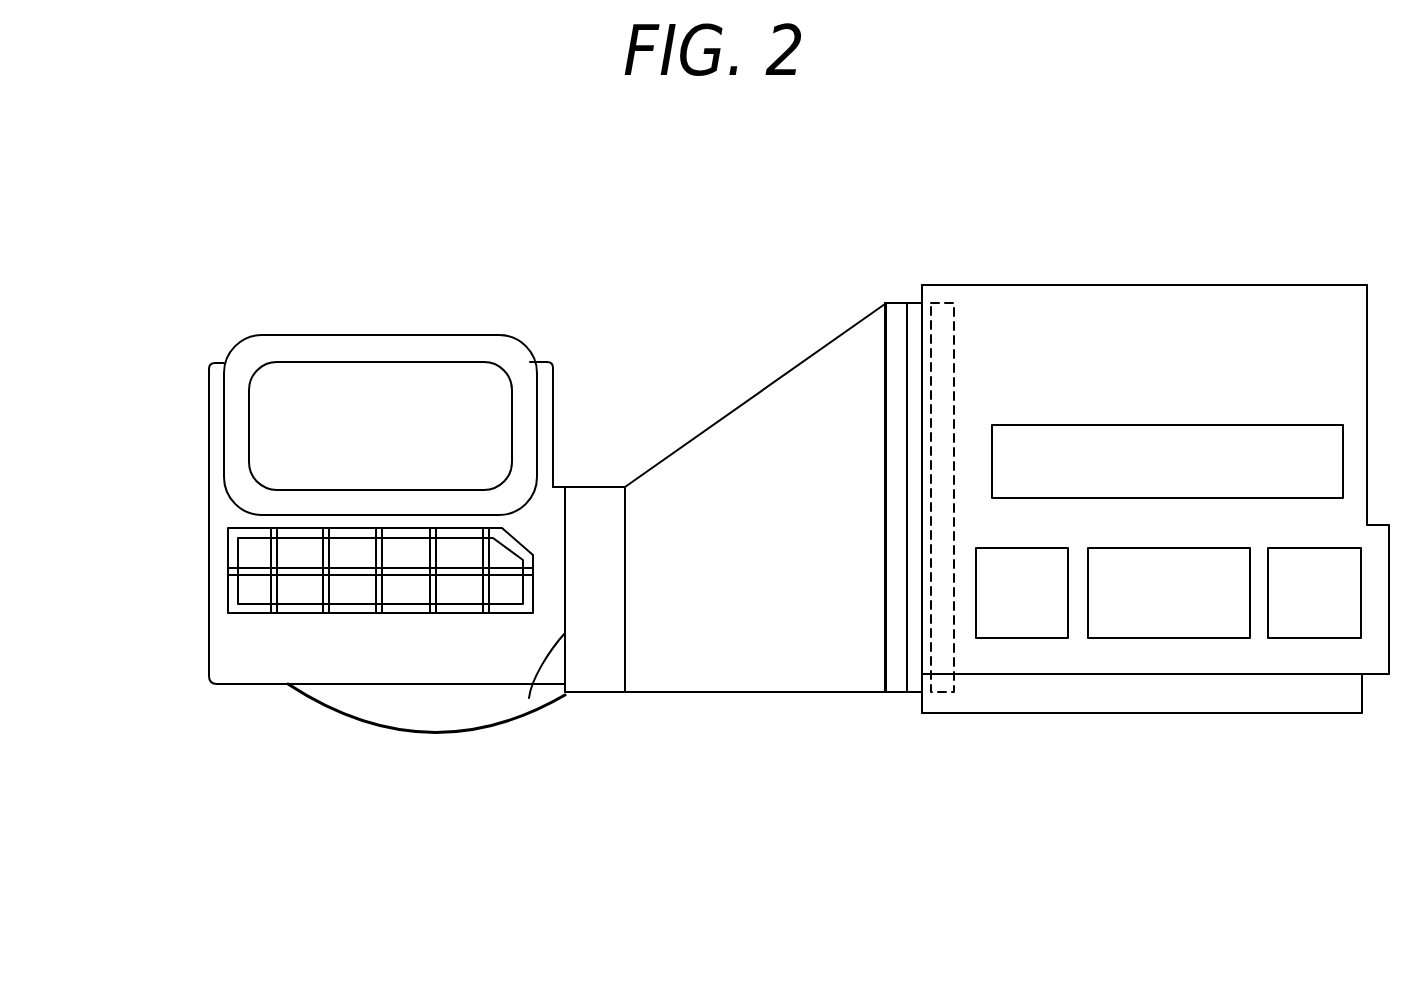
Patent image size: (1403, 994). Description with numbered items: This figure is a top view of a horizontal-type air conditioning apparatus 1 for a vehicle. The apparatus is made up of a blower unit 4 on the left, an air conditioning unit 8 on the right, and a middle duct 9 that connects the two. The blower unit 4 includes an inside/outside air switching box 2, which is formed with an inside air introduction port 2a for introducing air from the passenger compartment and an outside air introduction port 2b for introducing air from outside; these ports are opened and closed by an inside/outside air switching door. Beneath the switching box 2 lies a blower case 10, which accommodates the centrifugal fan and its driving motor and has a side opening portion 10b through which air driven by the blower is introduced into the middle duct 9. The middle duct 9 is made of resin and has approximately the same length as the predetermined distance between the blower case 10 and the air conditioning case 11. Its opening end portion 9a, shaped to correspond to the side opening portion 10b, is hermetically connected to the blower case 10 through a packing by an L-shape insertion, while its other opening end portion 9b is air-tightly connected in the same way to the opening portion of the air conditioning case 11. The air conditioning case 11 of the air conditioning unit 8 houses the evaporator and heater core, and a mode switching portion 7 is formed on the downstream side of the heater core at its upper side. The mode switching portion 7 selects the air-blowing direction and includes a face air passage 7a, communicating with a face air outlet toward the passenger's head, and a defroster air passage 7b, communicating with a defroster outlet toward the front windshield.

The air conditioning apparatus 1 is at (731, 304).
The inside/outside air switching box 2 is at (555, 425).
The inside air introduction port 2a is at (298, 588).
The outside air introduction port 2b is at (378, 405).
The blower unit 4 is at (545, 333).
The mode switching portion 7 is at (1180, 285).
The face air passage 7a is at (1025, 612).
The defroster air passage 7b is at (1082, 453).
The air conditioning unit 8 is at (921, 259).
The middle duct 9 is at (712, 423).
The opening end portion 9a is at (565, 667).
The opening end portion 9b is at (954, 575).
The blower case 10 is at (398, 730).
The side opening portion 10b is at (529, 698).
The air conditioning case 11 is at (1269, 269).